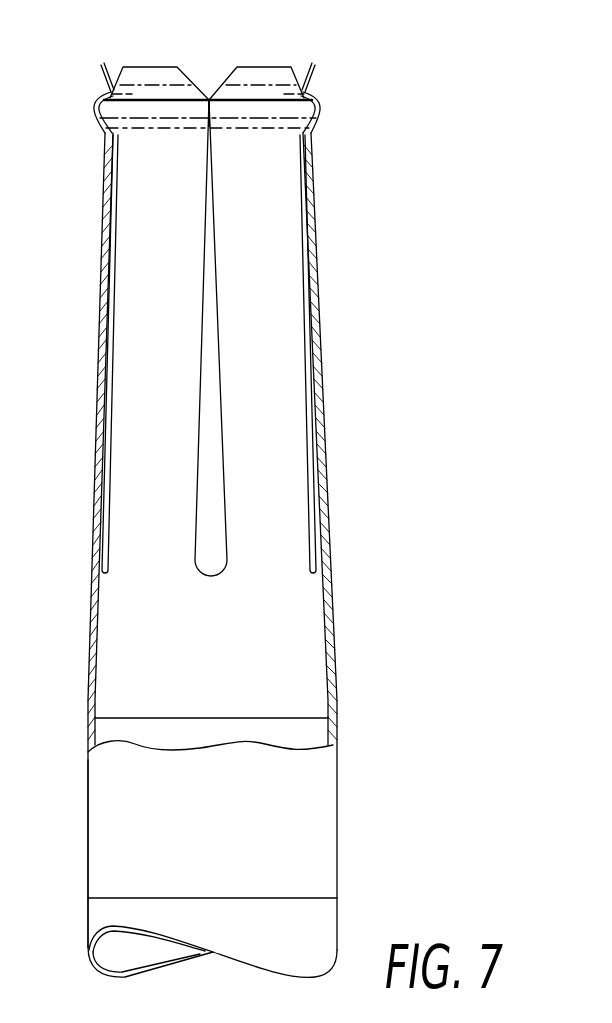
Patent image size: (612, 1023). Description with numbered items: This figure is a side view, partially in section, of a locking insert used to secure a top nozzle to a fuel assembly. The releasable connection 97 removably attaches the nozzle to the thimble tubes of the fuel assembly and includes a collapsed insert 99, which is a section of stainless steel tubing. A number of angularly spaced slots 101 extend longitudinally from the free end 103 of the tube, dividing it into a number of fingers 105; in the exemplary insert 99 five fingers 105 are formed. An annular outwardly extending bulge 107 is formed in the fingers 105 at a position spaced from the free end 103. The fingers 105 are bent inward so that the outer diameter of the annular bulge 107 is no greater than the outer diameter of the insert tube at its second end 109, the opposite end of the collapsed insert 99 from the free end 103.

The releasable connection 97 is at (366, 800).
The collapsed insert 99 is at (97, 843).
The slot 101 is at (312, 537).
The free end 103 is at (313, 66).
The finger 105 is at (282, 388).
The annular outwardly extending bulge 107 is at (322, 108).
The second end 109 is at (313, 898).